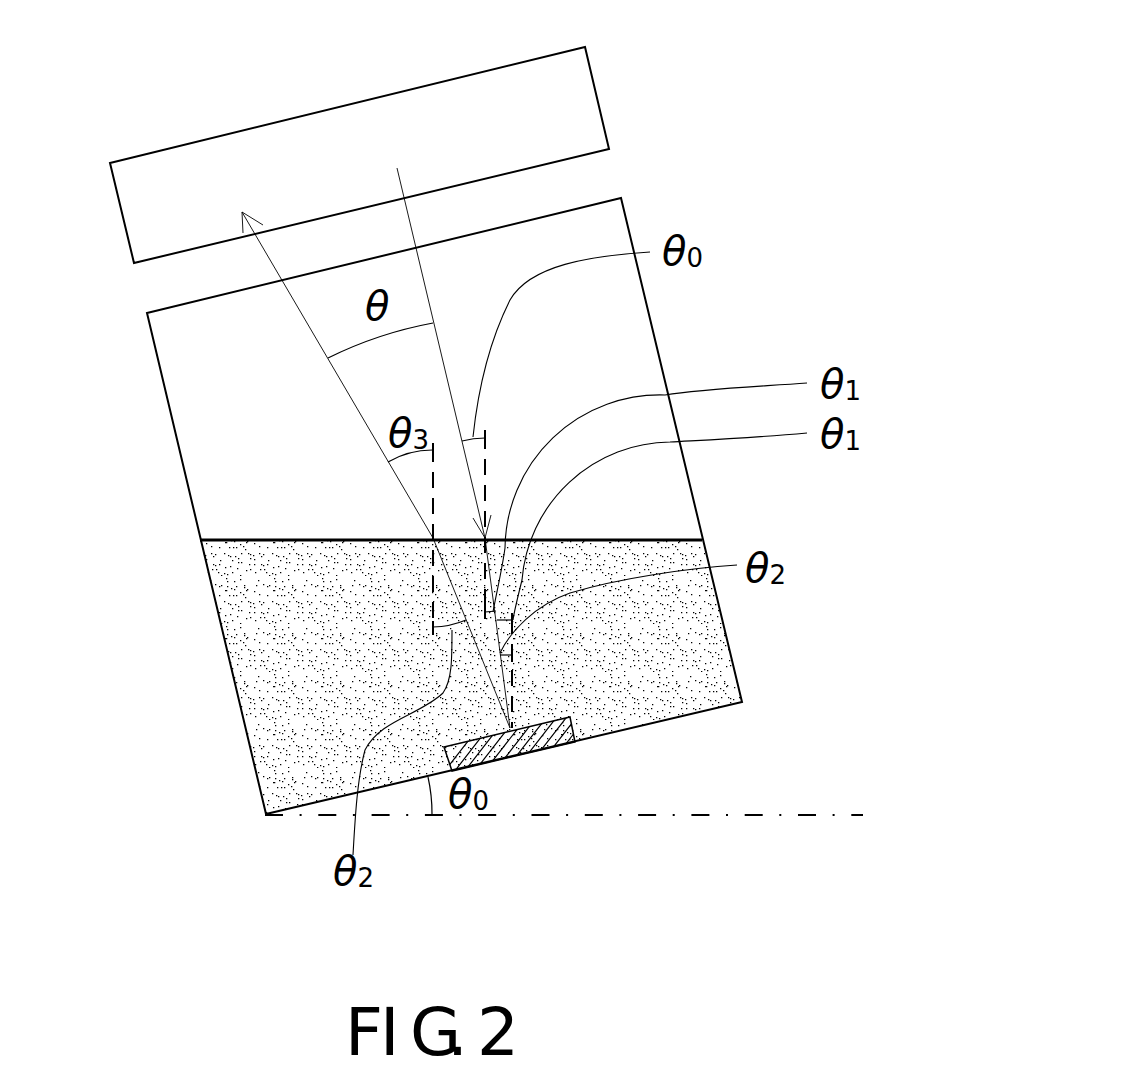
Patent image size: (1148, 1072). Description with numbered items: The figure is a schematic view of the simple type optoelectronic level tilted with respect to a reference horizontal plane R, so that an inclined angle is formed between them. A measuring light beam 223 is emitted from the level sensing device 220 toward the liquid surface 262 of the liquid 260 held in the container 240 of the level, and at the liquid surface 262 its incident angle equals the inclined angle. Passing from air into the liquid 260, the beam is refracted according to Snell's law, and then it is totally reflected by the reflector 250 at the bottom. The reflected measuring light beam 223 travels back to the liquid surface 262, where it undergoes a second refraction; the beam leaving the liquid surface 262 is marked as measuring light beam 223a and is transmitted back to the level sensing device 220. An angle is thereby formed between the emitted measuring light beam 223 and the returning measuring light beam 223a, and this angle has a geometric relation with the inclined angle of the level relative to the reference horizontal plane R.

The level sensing device 220 is at (602, 97).
The measuring light beam 223 is at (400, 181).
The measuring light beam emitted away from the liquid surface 223a is at (273, 265).
The container 240 is at (653, 333).
The reflector 250 is at (514, 750).
The liquid 260 is at (715, 650).
The liquid surface 262 is at (646, 522).
The reference horizontal plane R is at (697, 820).